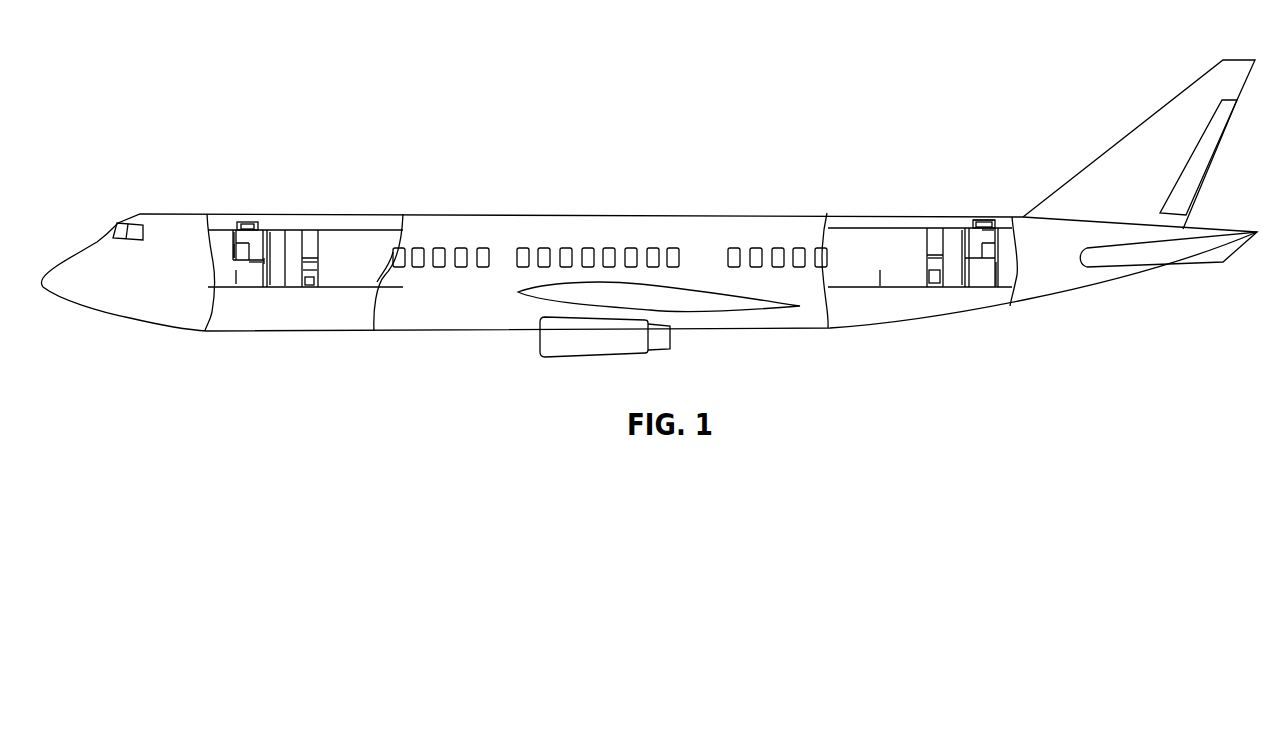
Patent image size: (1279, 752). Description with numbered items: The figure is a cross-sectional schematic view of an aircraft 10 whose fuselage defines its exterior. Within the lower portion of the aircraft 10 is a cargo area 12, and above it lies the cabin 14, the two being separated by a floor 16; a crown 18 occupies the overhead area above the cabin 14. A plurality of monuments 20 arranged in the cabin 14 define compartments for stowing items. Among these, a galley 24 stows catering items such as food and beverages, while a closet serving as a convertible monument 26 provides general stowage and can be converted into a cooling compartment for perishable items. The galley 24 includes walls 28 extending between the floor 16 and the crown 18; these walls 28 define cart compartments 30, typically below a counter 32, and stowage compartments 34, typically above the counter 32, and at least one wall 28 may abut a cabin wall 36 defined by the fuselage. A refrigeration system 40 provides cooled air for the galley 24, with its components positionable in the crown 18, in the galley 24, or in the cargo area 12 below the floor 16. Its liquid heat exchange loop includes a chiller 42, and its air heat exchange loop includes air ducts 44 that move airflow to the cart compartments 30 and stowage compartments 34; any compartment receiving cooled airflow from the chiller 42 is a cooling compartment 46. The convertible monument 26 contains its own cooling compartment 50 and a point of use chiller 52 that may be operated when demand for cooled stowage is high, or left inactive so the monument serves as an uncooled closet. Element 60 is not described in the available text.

The aircraft 10 is at (727, 90).
The cargo area 12 is at (321, 313).
The cabin 14 is at (879, 247).
The floor 16 is at (380, 272).
The crown 18 is at (386, 212).
The monuments 20 is at (330, 243).
The galley 24 is at (283, 237).
The convertible monument 26 is at (297, 237).
The walls 28 is at (264, 262).
The cart compartments 30 is at (242, 277).
The counter 32 is at (308, 284).
The stowage compartments 34 is at (233, 253).
The cabin wall 36 is at (290, 233).
The refrigeration system 40 is at (230, 224).
The chiller 42 is at (243, 221).
The air ducts 44 is at (232, 243).
The cooling compartment 46 is at (253, 281).
The cooling compartment 50 is at (314, 265).
The point of use chiller 52 is at (307, 288).
The top fitting 60 is at (962, 228).